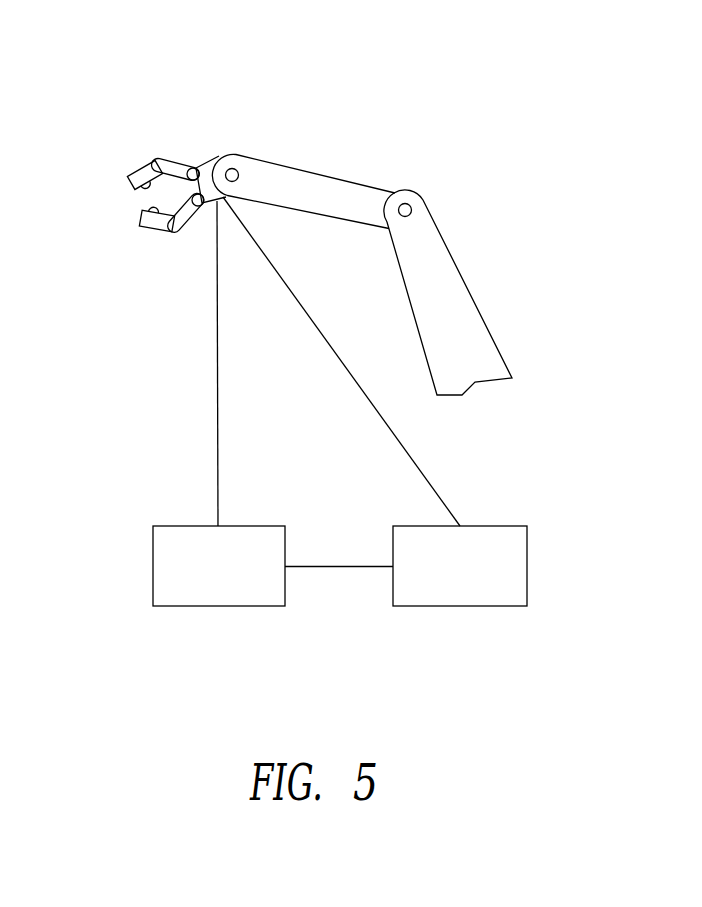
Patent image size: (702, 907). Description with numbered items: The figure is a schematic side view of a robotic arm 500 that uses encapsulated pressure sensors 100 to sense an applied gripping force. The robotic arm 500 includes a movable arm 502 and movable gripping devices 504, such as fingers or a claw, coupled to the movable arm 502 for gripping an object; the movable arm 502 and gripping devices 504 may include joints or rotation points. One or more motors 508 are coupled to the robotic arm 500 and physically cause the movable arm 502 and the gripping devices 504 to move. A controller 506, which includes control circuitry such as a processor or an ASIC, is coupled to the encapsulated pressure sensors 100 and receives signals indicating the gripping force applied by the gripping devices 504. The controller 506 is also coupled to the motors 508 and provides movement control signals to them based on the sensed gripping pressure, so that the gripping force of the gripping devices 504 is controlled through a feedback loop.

The robotic arm 500 is at (450, 73).
The movable arm 502 is at (432, 218).
The movable gripping devices 504 is at (183, 160).
The encapsulated pressure sensors 100 is at (137, 190).
The controller 506 is at (222, 607).
The motors 508 is at (462, 607).